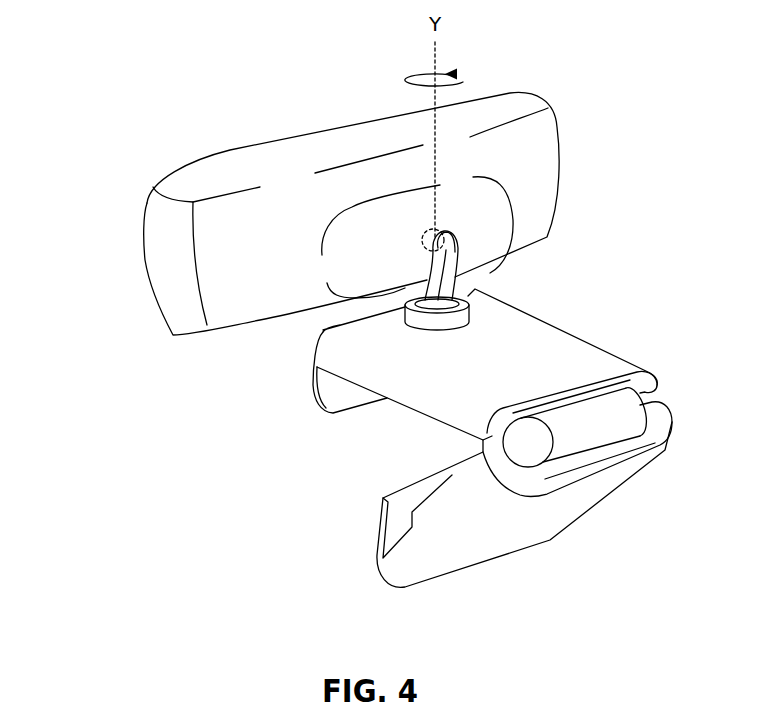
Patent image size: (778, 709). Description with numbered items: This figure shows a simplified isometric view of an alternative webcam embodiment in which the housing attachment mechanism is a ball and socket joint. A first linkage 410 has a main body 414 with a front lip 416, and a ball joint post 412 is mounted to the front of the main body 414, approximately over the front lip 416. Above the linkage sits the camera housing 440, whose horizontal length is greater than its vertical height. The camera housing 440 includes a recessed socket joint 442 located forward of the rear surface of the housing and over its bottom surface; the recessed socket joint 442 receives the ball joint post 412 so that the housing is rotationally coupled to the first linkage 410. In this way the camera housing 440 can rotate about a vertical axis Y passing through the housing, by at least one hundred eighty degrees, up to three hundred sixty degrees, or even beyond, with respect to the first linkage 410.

The camera housing 440 is at (367, 137).
The recessed socket joint 442 is at (422, 241).
The ball joint post 412 is at (457, 276).
The main body 414 is at (487, 364).
The front lip 416 is at (315, 398).
The first linkage 410 is at (570, 358).